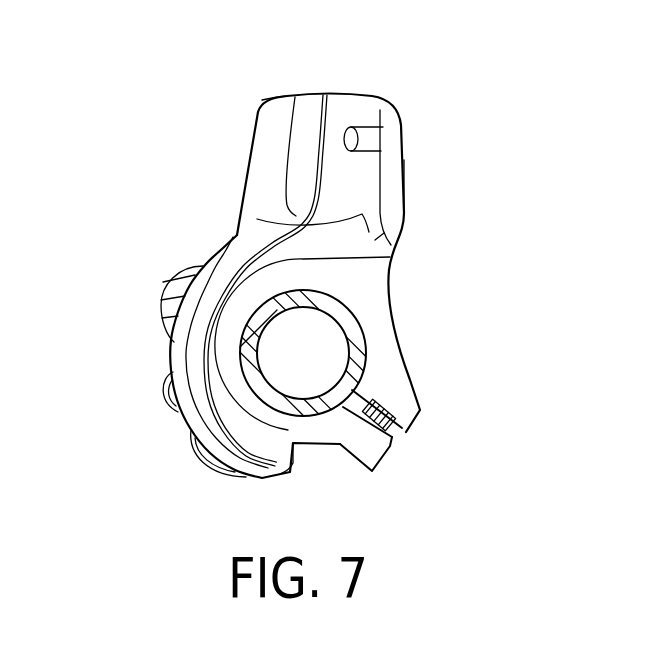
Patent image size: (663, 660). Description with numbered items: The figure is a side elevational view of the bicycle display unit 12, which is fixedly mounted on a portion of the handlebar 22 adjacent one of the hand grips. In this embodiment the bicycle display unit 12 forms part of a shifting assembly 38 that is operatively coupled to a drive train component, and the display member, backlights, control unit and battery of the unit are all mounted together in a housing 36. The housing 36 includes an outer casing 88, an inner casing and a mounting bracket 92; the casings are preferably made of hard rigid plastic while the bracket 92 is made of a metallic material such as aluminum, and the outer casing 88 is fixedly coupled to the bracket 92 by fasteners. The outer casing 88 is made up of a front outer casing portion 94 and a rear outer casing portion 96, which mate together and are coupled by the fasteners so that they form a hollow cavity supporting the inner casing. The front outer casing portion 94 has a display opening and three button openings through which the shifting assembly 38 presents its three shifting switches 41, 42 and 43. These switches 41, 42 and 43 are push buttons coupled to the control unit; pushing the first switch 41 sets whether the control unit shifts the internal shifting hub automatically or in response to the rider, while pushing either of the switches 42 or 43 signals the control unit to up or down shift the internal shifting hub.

The bicycle display unit 12 is at (298, 261).
The handlebar 22 is at (325, 322).
The housing 36 is at (412, 216).
The shifting assembly 38 is at (147, 376).
The shifting switch 41 is at (172, 283).
The shifting switch 42 is at (166, 392).
The shifting switch 43 is at (195, 448).
The outer casing 88 is at (288, 479).
The mounting bracket 92 is at (395, 318).
The front outer casing portion 94 is at (285, 97).
The rear outer casing portion 96 is at (372, 96).